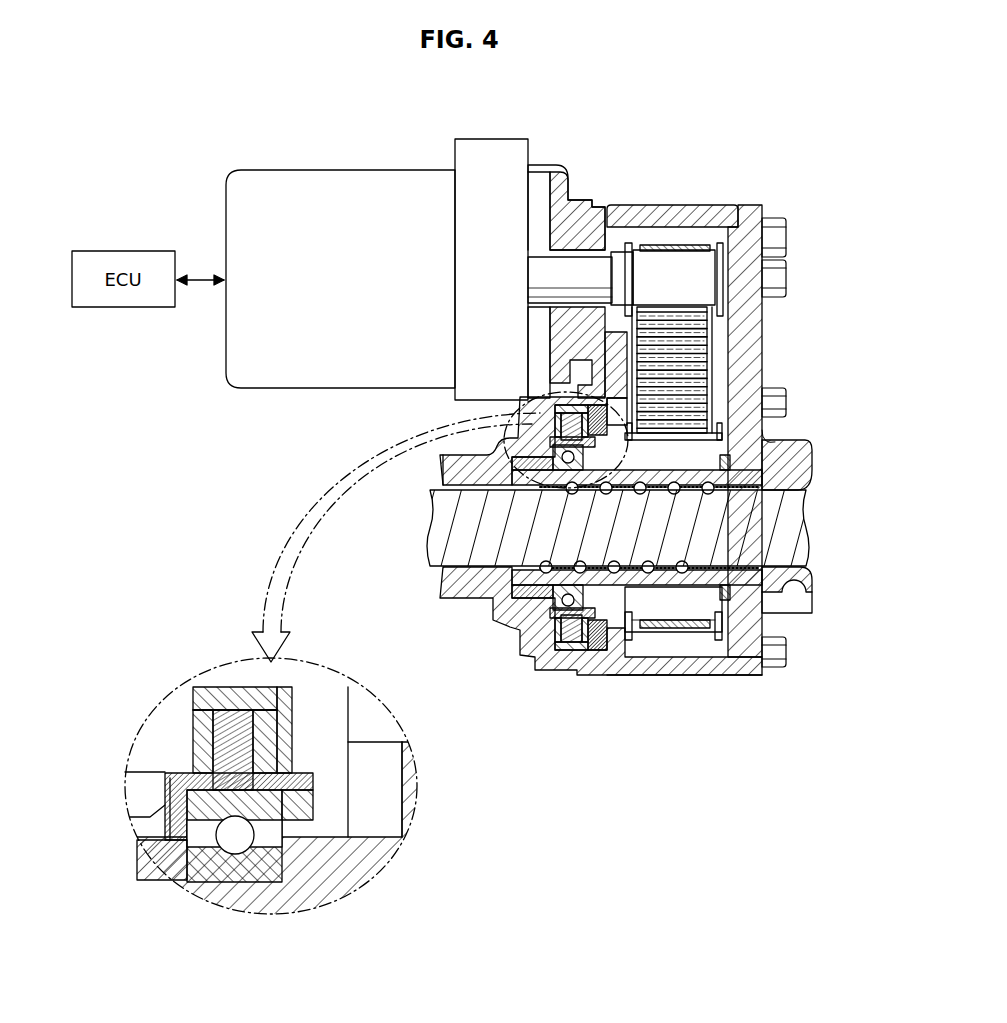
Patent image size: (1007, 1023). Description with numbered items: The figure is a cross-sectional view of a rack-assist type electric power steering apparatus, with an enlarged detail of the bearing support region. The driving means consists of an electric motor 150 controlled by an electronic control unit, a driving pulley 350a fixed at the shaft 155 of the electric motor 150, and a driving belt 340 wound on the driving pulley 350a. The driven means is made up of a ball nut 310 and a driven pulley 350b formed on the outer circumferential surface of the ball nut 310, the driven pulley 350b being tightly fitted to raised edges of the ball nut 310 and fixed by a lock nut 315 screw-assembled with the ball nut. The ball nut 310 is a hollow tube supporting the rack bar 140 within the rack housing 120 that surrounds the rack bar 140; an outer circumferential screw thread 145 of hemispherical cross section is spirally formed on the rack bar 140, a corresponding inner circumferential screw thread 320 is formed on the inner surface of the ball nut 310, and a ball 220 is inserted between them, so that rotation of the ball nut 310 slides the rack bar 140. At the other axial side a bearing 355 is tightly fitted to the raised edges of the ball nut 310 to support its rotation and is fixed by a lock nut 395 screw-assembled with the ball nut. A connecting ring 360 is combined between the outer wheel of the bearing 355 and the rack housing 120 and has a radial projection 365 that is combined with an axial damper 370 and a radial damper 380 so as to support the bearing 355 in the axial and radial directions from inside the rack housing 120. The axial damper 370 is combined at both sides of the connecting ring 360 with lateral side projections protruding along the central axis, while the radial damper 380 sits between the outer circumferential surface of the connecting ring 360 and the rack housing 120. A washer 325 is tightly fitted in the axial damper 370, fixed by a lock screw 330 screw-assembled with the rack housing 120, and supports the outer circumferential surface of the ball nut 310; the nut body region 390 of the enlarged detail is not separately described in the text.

The electric motor 150 is at (343, 183).
The shaft 155 is at (579, 268).
The driving pulley 350a is at (672, 265).
The driving belt 340 is at (707, 360).
The ball nut 310 is at (700, 462).
The rack bar 140 is at (788, 531).
The lock nut 315 is at (785, 592).
The outer circumferential screw thread 145 is at (478, 557).
The ball 220 is at (575, 650).
The lock screw 330 is at (597, 650).
The inner circumferential screw thread 320 is at (657, 587).
The rack housing 120 is at (681, 667).
The driven pulley 350b is at (690, 610).
The radial projection 365 is at (232, 722).
The radial damper 380 is at (255, 700).
The washer 325 is at (284, 715).
The axial damper 370 is at (258, 740).
The connecting ring 360 is at (175, 777).
The lock nut 395 is at (173, 862).
The bearing 355 is at (235, 875).
The nut body 390 is at (300, 822).